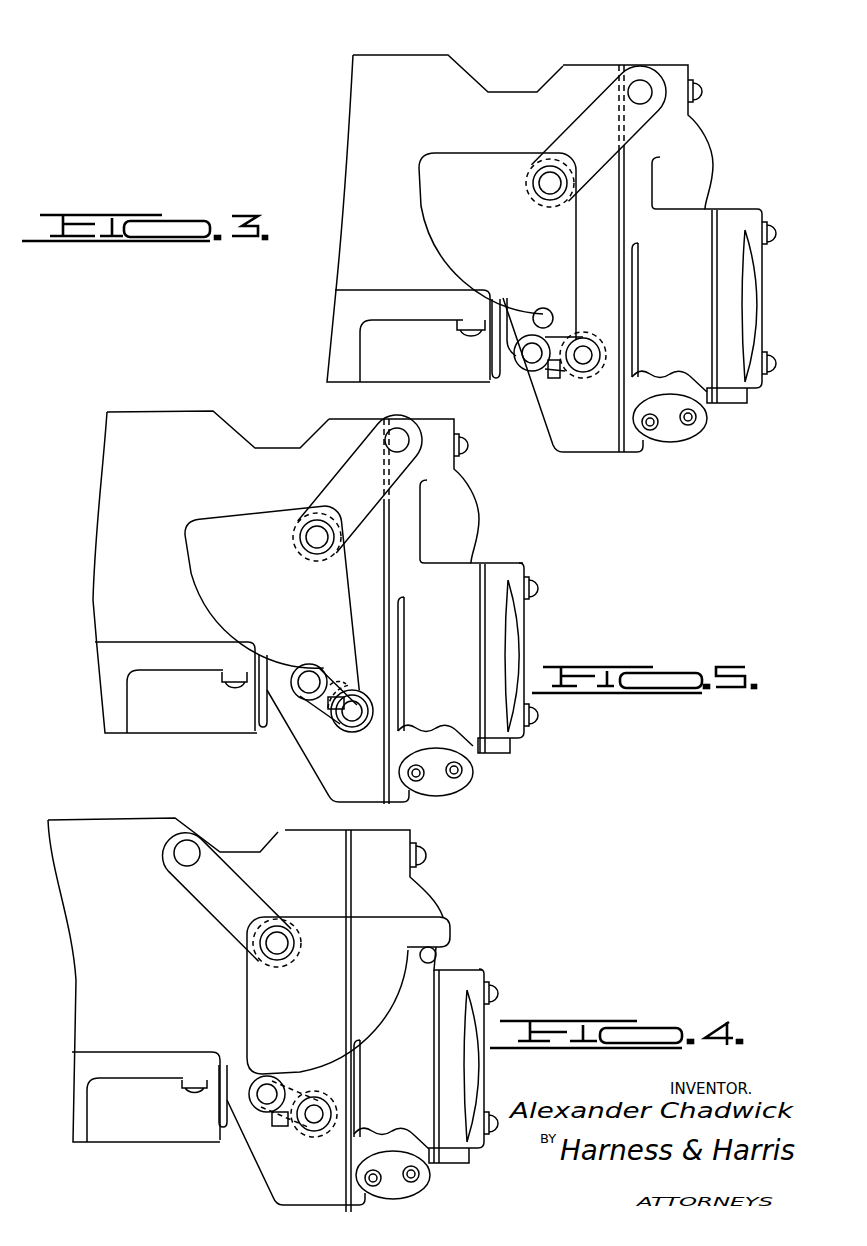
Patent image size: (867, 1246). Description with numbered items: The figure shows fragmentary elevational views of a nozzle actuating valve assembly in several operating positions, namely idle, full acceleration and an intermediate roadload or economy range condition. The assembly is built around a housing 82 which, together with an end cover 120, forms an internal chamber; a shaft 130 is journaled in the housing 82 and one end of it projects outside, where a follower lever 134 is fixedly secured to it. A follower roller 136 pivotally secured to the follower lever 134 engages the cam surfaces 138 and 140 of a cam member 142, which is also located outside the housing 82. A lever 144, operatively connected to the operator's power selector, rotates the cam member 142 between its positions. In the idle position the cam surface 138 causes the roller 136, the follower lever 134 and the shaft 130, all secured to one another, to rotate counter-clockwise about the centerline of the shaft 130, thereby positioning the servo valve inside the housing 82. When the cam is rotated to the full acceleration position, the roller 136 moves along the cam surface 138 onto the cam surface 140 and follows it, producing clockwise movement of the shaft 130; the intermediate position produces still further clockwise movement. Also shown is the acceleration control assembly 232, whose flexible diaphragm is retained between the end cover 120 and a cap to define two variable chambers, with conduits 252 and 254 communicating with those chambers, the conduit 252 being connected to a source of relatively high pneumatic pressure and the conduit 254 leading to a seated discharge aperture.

In FIG. 3, the housing 82 is at (352, 55).
In FIG. 5, the housing 82 is at (170, 411).
In FIG. 4, the housing 82 is at (70, 818).
In FIG. 3, the end cover 120 is at (710, 148).
In FIG. 5, the end cover 120 is at (480, 513).
In FIG. 4, the end cover 120 is at (433, 900).
In FIG. 3, the shaft 130 is at (586, 373).
In FIG. 5, the shaft 130 is at (352, 733).
In FIG. 4, the shaft 130 is at (318, 1133).
In FIG. 3, the follower lever 134 is at (556, 378).
In FIG. 5, the follower lever 134 is at (320, 710).
In FIG. 4, the follower lever 134 is at (273, 1128).
In FIG. 3, the follower roller 136 is at (552, 372).
In FIG. 5, the follower roller 136 is at (313, 700).
In FIG. 4, the follower roller 136 is at (280, 1123).
In FIG. 3, the cam surface 138 is at (547, 290).
In FIG. 5, the cam surface 138 is at (347, 697).
In FIG. 4, the cam surface 138 is at (437, 955).
In FIG. 3, the cam surface 140 is at (455, 272).
In FIG. 5, the cam surface 140 is at (186, 597).
In FIG. 4, the cam surface 140 is at (382, 1022).
In FIG. 3, the cam member 142 is at (483, 120).
In FIG. 5, the cam member 142 is at (205, 517).
In FIG. 3, the lever 144 is at (608, 70).
In FIG. 5, the lever 144 is at (345, 460).
In FIG. 4, the lever 144 is at (198, 902).
In FIG. 3, the acceleration control assembly 232 is at (783, 178).
In FIG. 5, the acceleration control assembly 232 is at (526, 564).
In FIG. 4, the acceleration control assembly 232 is at (488, 969).
In FIG. 3, the conduit 252 is at (652, 430).
In FIG. 5, the conduit 252 is at (419, 782).
In FIG. 4, the conduit 252 is at (375, 1168).
In FIG. 3, the conduit 254 is at (690, 426).
In FIG. 5, the conduit 254 is at (463, 773).
In FIG. 4, the conduit 254 is at (421, 1175).